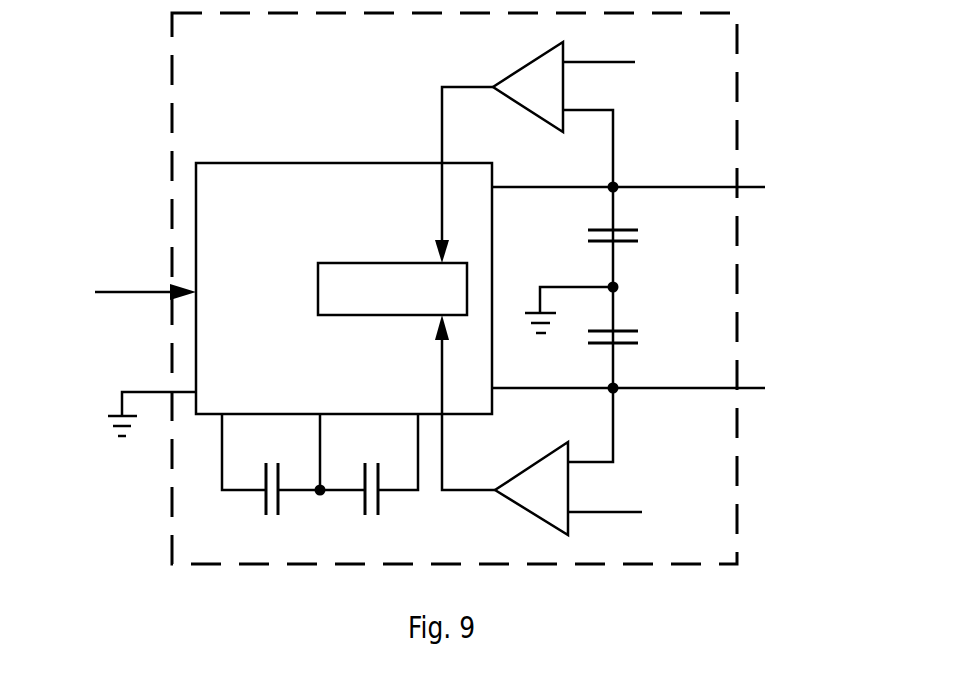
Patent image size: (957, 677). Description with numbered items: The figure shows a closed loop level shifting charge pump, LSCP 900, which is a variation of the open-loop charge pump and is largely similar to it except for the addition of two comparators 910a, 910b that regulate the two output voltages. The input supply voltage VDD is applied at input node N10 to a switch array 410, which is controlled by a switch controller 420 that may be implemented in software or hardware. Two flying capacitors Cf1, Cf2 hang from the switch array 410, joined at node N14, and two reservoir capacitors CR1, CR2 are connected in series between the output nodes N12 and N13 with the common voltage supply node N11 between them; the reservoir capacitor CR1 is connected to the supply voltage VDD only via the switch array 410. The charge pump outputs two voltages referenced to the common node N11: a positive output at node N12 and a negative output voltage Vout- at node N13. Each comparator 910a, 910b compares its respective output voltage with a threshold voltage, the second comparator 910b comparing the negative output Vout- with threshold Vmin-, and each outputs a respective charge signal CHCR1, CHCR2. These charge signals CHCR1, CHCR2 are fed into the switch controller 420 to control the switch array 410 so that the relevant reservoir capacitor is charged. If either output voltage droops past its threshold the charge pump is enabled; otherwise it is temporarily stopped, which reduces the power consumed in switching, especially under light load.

The closed loop LSCP 900 is at (454, 288).
The switch array 410 is at (344, 288).
The switch controller 420 is at (392, 289).
The comparator 910a is at (528, 87).
The comparator 910b is at (531, 488).
The input supply node N10 is at (145, 284).
The common voltage supply node N11 is at (599, 305).
The positive output node N12 is at (641, 172).
The negative output node N13 is at (641, 401).
The flying capacitor node N14 is at (324, 469).
The reservoir capacitor CR1 is at (635, 228).
The reservoir capacitor CR2 is at (635, 330).
The flying capacitor Cf1 is at (273, 506).
The flying capacitor Cf2 is at (372, 506).
The charge signal CHCR1 is at (459, 163).
The charge signal CHCR2 is at (470, 402).
The threshold voltage Vmin- is at (637, 511).
The output voltage Vout- is at (657, 388).
The input supply voltage VDD is at (59, 291).